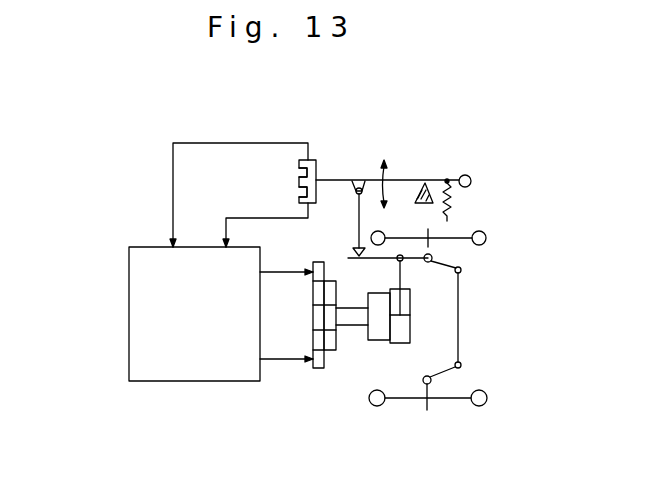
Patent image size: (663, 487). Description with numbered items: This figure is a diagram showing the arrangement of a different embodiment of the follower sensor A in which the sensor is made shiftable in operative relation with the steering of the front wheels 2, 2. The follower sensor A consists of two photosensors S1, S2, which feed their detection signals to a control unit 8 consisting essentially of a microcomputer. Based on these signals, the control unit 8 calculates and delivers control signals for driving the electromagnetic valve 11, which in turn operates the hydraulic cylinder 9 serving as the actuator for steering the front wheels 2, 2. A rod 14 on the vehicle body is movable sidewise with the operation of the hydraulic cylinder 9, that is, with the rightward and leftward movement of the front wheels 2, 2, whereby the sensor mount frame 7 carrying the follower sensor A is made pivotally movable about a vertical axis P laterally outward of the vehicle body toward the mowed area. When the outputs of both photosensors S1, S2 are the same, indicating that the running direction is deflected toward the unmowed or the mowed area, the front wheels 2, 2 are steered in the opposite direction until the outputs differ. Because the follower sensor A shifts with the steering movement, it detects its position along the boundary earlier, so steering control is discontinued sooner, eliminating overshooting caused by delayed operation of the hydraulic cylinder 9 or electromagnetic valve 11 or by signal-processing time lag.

The control unit 8 is at (129, 275).
The follower sensor A is at (244, 157).
The photosensor S1 is at (299, 197).
The photosensor S2 is at (299, 170).
The sensor mount frame 7 is at (420, 181).
The vertical axis P is at (466, 175).
The rod 14 is at (359, 222).
The front wheel 2 is at (486, 234).
The hydraulic cylinder 9 is at (410, 337).
The electromagnetic valve 11 is at (331, 368).